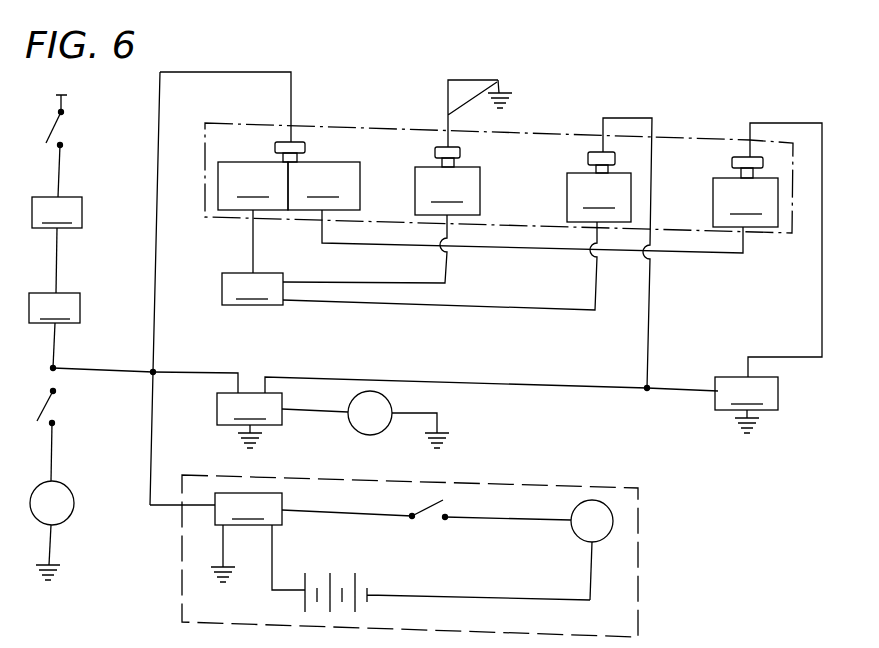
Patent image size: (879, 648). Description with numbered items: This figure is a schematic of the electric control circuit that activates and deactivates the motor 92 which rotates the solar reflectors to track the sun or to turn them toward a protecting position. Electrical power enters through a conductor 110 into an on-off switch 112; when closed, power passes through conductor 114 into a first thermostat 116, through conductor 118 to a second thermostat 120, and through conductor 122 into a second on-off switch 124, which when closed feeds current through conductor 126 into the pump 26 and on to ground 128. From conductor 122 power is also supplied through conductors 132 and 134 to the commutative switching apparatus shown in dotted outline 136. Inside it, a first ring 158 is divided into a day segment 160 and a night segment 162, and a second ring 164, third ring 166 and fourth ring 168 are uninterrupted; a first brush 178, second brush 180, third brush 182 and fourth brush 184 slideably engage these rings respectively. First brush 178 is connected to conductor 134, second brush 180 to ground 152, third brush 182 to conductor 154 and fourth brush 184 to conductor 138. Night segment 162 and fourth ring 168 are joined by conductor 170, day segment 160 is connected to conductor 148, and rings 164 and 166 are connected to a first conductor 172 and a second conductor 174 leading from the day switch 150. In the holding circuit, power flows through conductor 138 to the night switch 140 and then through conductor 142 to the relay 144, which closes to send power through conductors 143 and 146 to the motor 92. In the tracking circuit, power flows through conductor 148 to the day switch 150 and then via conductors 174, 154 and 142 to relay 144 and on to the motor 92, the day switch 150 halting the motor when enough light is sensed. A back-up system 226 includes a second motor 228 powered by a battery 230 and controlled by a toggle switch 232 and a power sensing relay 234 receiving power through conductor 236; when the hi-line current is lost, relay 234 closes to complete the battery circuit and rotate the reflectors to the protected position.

The conductor 110 is at (66, 97).
The on-off switch 112 is at (52, 130).
The conductor 114 is at (59, 180).
The first thermostat 116 is at (57, 212).
The conductor 118 is at (57, 265).
The second thermostat 120 is at (54, 308).
The conductor 122 is at (55, 343).
The conductor 132 is at (80, 368).
The conductor 143 is at (190, 373).
The second on-off switch 124 is at (50, 405).
The conductor 126 is at (52, 445).
The pump 26 is at (74, 500).
The ground 128 is at (58, 563).
The conductor 134 is at (162, 107).
The conductor 236 is at (152, 452).
The commutative switching apparatus 136 is at (353, 125).
The first brush 178 is at (278, 147).
The day segment 160 is at (253, 186).
The night segment 162 is at (324, 186).
The first ring 158 is at (392, 187).
The second brush 180 is at (435, 150).
The second ring 164 is at (447, 191).
The ground 152 is at (498, 78).
The third brush 182 is at (587, 157).
The third ring 166 is at (599, 197).
The conductor 154 is at (620, 118).
The conductor 142 is at (435, 382).
The relay 144 is at (249, 420).
The conductor 146 is at (312, 413).
The motor 92 is at (356, 432).
The night switch 140 is at (746, 405).
The conductor 138 is at (783, 121).
The fourth brush 184 is at (732, 162).
The fourth ring 168 is at (745, 202).
The conductor 148 is at (253, 253).
The day switch 150 is at (252, 289).
The conductor 170 is at (365, 247).
The first conductor 172 is at (447, 270).
The second conductor 174 is at (595, 290).
The back-up system 226 is at (643, 527).
The power sensing relay 234 is at (246, 537).
The battery 230 is at (343, 580).
The toggle switch 232 is at (420, 512).
The second motor 228 is at (575, 537).